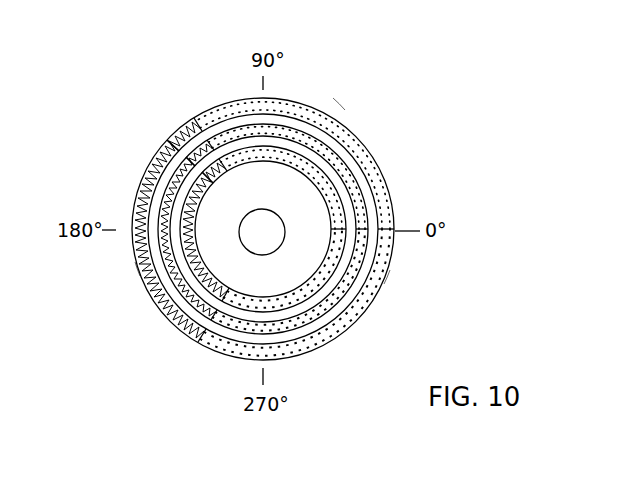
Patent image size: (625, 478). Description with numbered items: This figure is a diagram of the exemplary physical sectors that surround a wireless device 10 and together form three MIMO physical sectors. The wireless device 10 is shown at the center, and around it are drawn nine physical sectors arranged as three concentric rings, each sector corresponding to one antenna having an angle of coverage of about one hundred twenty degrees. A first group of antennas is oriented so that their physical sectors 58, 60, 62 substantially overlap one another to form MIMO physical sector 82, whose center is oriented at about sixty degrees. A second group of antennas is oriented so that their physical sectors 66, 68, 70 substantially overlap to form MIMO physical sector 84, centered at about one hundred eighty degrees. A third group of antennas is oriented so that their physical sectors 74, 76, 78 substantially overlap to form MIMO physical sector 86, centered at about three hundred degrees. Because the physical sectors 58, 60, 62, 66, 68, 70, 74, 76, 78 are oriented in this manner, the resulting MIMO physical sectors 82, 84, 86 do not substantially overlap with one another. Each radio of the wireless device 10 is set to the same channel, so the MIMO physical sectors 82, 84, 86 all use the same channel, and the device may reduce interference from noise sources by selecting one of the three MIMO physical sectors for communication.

The wireless device 10 is at (274, 242).
The physical sector 58 is at (345, 210).
The physical sector 60 is at (355, 176).
The physical sector 62 is at (352, 140).
The physical sector 66 is at (208, 160).
The physical sector 68 is at (188, 162).
The physical sector 70 is at (160, 177).
The physical sector 74 is at (327, 290).
The physical sector 76 is at (320, 322).
The physical sector 78 is at (308, 348).
The MIMO physical sector 82 is at (333, 98).
The MIMO physical sector 84 is at (103, 273).
The MIMO physical sector 86 is at (403, 283).